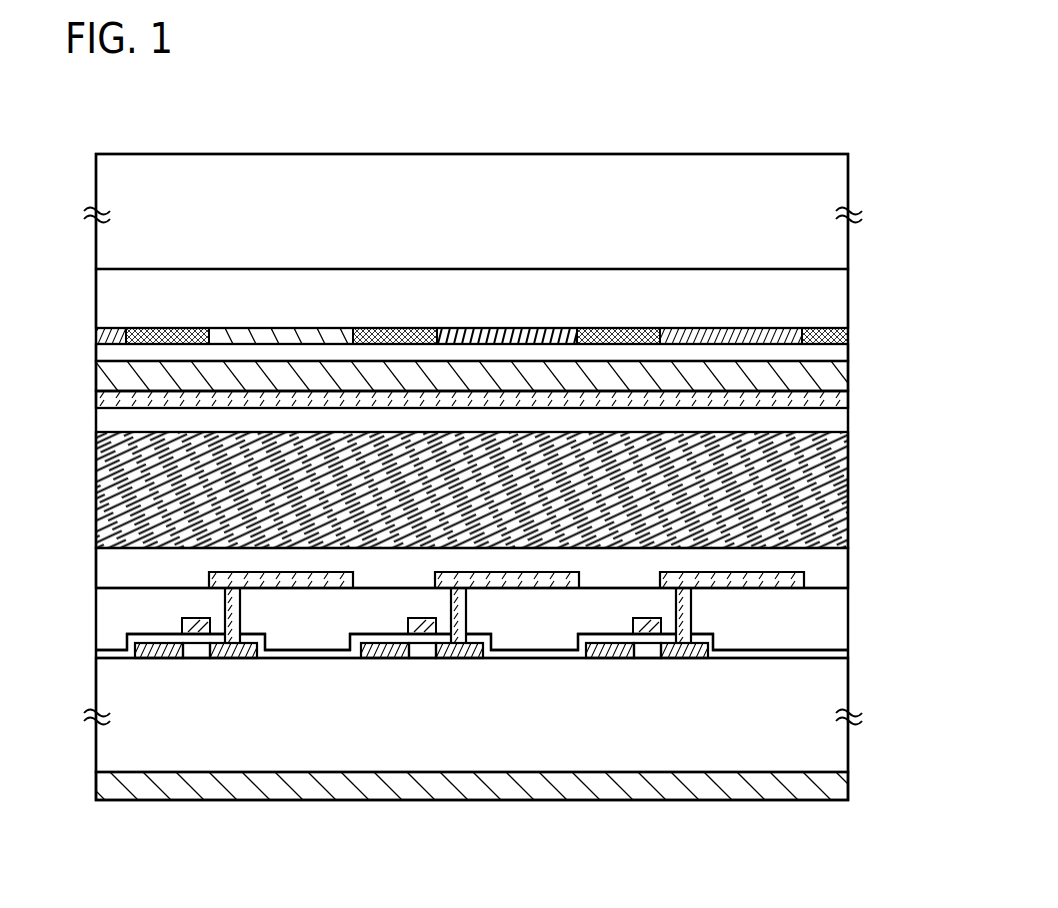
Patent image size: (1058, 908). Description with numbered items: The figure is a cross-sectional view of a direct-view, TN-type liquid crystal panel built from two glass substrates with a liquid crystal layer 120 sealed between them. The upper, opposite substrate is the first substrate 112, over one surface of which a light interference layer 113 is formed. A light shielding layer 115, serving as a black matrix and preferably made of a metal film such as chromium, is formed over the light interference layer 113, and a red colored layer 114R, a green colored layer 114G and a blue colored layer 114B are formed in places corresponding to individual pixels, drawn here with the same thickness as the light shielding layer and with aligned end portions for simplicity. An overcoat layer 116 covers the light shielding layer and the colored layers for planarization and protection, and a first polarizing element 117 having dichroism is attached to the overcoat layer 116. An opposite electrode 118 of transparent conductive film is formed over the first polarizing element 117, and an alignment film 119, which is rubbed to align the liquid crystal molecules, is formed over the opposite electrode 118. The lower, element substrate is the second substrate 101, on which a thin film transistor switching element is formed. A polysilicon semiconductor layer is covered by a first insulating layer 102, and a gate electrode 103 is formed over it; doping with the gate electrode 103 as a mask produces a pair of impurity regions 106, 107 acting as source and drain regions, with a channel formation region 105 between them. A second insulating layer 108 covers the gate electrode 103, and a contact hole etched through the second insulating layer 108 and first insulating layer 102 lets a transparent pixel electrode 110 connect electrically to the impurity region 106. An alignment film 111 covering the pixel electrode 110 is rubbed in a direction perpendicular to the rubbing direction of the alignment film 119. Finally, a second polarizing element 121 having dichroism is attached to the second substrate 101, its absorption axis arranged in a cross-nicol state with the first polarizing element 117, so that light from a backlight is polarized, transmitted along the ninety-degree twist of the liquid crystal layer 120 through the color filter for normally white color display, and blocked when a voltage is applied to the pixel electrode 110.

The second substrate 101 is at (830, 694).
The first insulating layer 102 is at (830, 652).
The gate electrode 103 is at (190, 627).
The channel formation region 105 is at (197, 658).
The impurity region 106 is at (252, 658).
The impurity region 107 is at (153, 658).
The second insulating layer 108 is at (830, 619).
The pixel electrode 110 is at (318, 583).
The alignment film 111 is at (830, 569).
The first substrate 112 is at (830, 183).
The light interference layer 113 is at (830, 302).
The red colored layer 114R is at (280, 328).
The green colored layer 114G is at (505, 328).
The blue colored layer 114B is at (758, 328).
The light shielding layer 115 is at (390, 328).
The overcoat layer 116 is at (830, 350).
The first polarizing element 117 is at (830, 381).
The opposite electrode 118 is at (697, 398).
The alignment film 119 is at (830, 416).
The liquid crystal layer 120 is at (830, 488).
The second polarizing element 121 is at (830, 789).